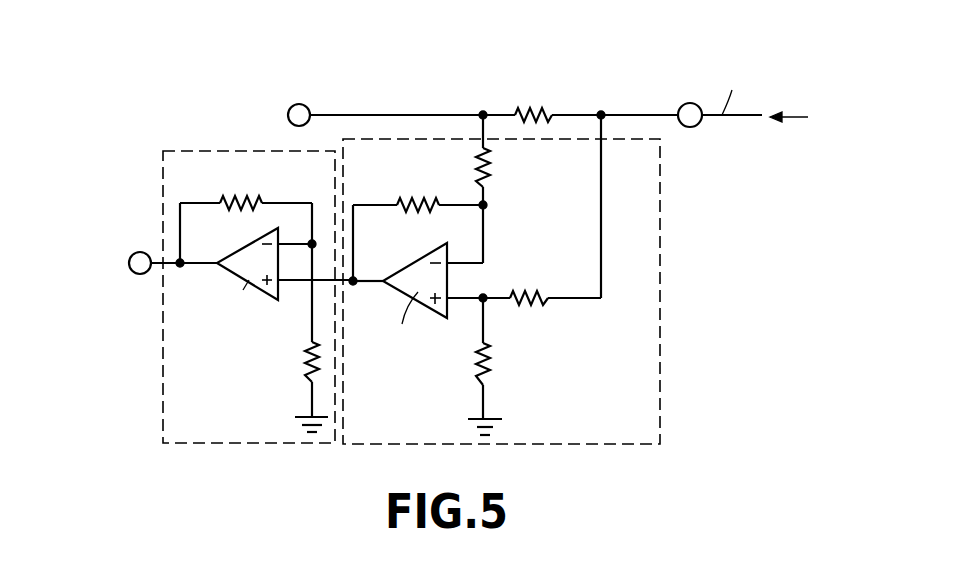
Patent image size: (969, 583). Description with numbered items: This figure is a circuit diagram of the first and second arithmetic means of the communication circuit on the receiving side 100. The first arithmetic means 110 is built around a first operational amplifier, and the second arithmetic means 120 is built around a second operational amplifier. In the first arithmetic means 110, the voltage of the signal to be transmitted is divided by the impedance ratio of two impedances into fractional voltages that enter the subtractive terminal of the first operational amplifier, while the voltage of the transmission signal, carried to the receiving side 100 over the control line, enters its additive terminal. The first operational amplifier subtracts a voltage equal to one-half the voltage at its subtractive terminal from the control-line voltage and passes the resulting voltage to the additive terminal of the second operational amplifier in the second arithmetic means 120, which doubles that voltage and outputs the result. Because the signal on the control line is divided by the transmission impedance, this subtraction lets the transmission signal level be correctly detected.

The receiving side 100 is at (426, 95).
The first arithmetic means 110 is at (660, 265).
The second arithmetic means 120 is at (163, 188).